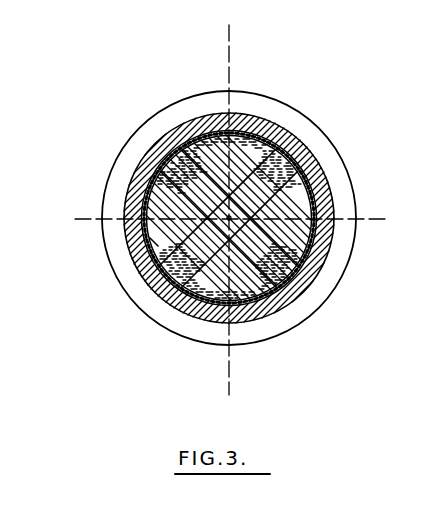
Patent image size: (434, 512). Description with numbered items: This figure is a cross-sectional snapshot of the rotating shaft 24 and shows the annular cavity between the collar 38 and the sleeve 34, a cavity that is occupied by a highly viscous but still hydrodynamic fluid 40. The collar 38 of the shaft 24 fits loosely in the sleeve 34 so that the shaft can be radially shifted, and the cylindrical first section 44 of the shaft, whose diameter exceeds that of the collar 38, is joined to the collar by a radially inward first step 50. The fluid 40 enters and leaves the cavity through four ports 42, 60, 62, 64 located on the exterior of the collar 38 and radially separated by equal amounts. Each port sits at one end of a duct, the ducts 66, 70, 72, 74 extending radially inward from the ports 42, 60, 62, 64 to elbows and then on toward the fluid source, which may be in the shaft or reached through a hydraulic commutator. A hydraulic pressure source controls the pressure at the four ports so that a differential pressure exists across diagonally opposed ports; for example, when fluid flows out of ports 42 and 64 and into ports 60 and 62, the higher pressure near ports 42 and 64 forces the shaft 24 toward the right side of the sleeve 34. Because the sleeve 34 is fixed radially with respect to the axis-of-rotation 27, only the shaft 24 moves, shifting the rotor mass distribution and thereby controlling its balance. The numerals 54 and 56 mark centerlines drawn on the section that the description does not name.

The shaft 24 is at (110, 148).
The axis-of-rotation 27 is at (313, 184).
The sleeve 34 is at (118, 186).
The collar 38 is at (178, 333).
The fluid 40 is at (305, 262).
The port 42 is at (166, 135).
The first section 44 is at (270, 97).
The first step 50 is at (307, 137).
The horizontal axis 54 is at (372, 219).
The vertical axis 56 is at (229, 50).
The port 60 is at (300, 148).
The port 62 is at (296, 300).
The port 64 is at (160, 272).
The duct 66 is at (154, 160).
The duct 70 is at (214, 135).
The duct 72 is at (258, 300).
The duct 74 is at (150, 241).